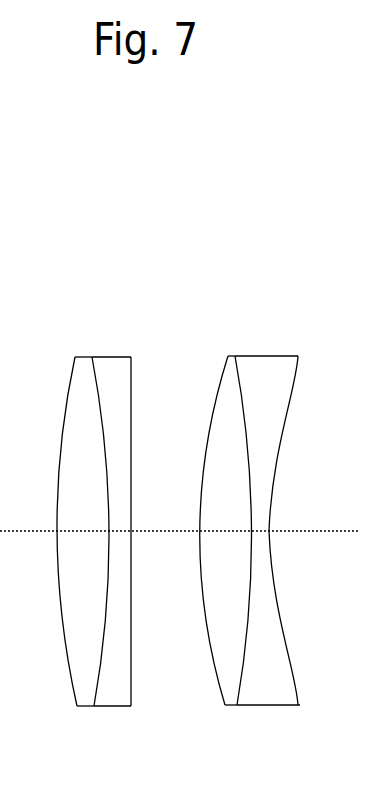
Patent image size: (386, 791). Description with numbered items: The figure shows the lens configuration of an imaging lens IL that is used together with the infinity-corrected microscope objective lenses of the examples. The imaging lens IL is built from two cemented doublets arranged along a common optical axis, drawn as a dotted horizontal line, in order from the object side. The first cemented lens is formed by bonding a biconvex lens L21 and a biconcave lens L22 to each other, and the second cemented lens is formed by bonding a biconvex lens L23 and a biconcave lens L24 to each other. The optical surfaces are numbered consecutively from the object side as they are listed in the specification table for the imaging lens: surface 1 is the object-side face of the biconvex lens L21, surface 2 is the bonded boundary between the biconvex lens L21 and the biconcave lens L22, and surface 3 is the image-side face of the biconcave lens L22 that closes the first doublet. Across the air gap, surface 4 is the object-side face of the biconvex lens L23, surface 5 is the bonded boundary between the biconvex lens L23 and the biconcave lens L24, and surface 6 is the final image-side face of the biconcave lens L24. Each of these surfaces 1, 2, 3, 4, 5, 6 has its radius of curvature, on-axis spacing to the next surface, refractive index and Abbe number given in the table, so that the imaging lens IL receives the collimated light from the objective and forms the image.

The imaging lens IL is at (259, 226).
The biconvex lens L21 is at (83, 357).
The biconcave lens L22 is at (113, 357).
The biconvex lens L23 is at (231, 356).
The biconcave lens L24 is at (273, 356).
The optical surface 1 is at (76, 693).
The optical surface 2 is at (96, 698).
The optical surface 3 is at (132, 693).
The optical surface 4 is at (223, 690).
The optical surface 5 is at (238, 690).
The optical surface 6 is at (295, 687).